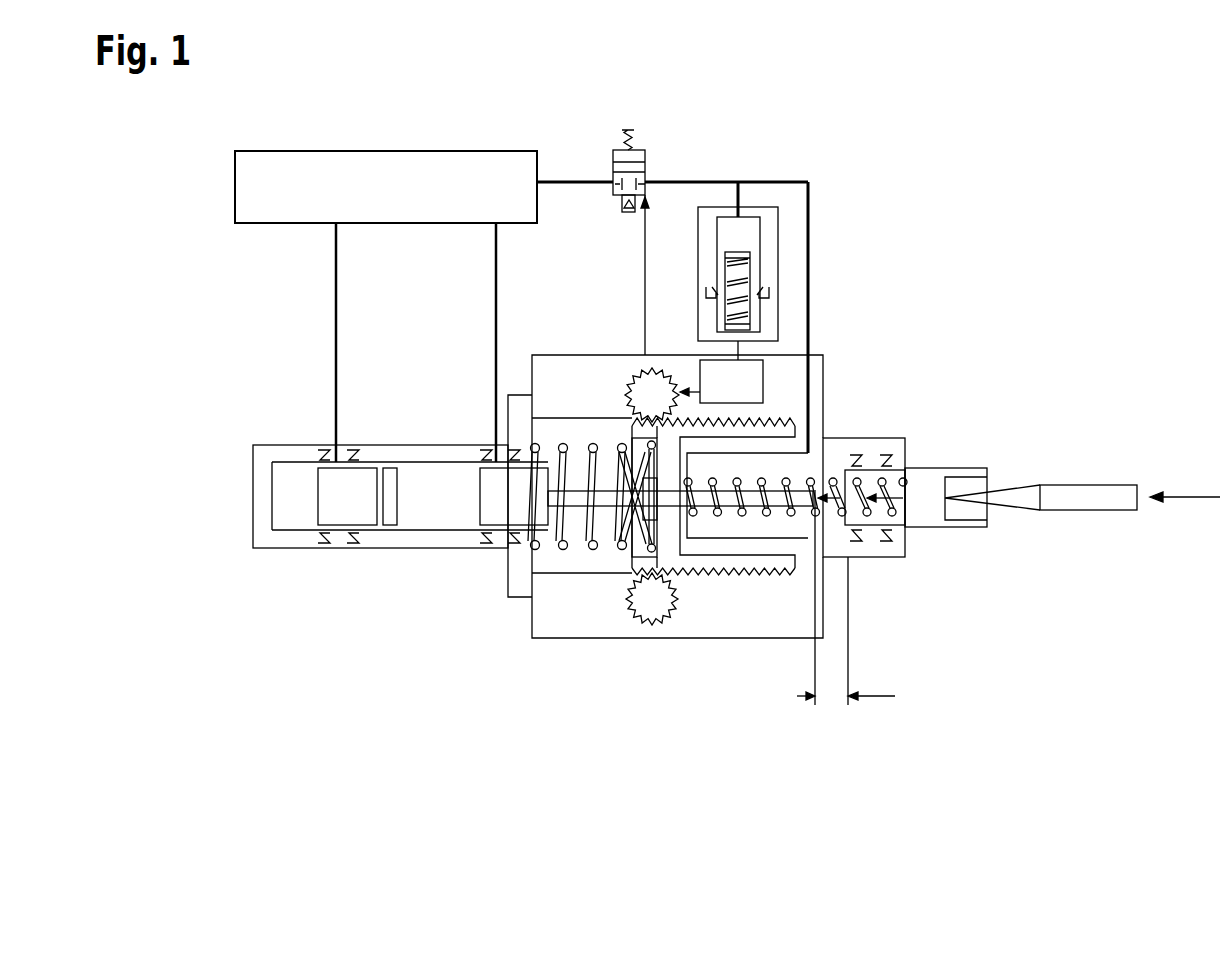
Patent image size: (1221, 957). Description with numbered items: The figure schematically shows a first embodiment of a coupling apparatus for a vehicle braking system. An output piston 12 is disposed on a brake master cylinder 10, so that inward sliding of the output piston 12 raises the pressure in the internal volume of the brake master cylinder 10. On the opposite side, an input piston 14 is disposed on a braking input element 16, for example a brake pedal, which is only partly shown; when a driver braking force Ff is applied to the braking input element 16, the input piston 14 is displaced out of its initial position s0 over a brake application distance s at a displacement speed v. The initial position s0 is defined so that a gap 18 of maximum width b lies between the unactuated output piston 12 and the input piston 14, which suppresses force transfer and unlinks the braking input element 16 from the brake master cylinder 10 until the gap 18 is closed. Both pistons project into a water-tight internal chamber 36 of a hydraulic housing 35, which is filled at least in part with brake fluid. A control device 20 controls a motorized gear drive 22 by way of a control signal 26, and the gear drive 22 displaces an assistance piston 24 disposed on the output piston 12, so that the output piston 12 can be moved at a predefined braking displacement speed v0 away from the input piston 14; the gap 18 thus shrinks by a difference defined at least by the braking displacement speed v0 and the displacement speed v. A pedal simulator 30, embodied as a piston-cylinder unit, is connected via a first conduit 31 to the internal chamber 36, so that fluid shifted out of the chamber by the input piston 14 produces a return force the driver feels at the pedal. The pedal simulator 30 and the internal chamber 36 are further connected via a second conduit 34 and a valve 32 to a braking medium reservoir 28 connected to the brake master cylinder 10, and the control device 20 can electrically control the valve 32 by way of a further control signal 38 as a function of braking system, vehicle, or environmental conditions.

The brake master cylinder 10 is at (388, 549).
The output piston 12 is at (618, 540).
The input piston 14 is at (925, 515).
The braking input element 16 is at (1087, 499).
The gap 18 is at (835, 464).
The control device 20 is at (765, 385).
The motorized gear drive 22 is at (630, 378).
The assistance piston 24 is at (742, 562).
The control signal 26 is at (700, 358).
The braking medium reservoir 28 is at (313, 152).
The pedal simulator 30 is at (772, 268).
The first conduit 31 is at (810, 302).
The valve 32 is at (648, 153).
The second conduit 34 is at (572, 186).
The hydraulic housing 35 is at (790, 402).
The internal chamber 36 is at (850, 528).
The further control signal 38 is at (645, 282).
The driver braking force Ff is at (1195, 492).
The braking displacement speed v0 is at (757, 510).
The brake application distance s is at (832, 513).
The displacement speed v is at (927, 514).
The initial position s0 is at (887, 639).
The maximum width b is at (835, 700).